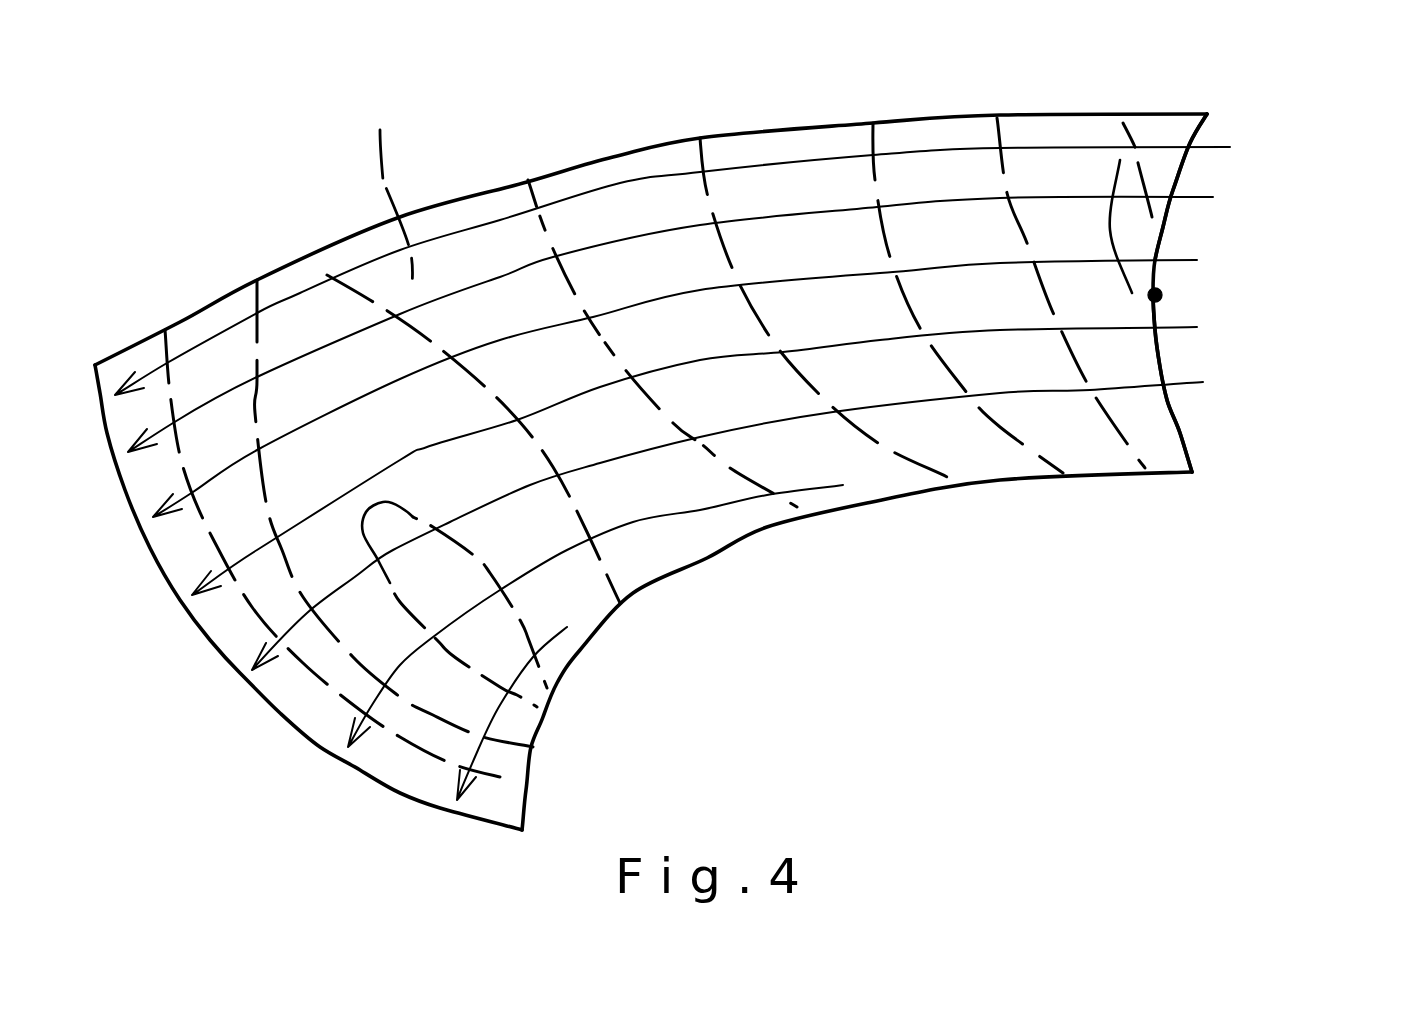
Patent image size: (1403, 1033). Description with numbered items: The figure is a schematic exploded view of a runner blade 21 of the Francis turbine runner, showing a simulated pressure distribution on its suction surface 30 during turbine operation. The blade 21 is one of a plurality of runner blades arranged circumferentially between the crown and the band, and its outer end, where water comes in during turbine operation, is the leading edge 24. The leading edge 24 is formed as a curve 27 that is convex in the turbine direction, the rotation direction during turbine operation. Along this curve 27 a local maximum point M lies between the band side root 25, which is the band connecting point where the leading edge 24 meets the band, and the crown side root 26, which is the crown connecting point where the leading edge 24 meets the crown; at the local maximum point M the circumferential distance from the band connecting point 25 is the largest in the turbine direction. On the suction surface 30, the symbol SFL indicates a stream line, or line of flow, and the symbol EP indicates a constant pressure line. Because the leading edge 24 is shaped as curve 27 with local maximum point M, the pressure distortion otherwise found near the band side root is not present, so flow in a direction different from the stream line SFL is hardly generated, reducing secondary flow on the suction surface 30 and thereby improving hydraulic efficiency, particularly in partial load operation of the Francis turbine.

The runner blade 21 is at (224, 207).
The leading edge 24 is at (1157, 357).
The band side root 25 is at (757, 537).
The crown side root 26 is at (737, 133).
The curve 27 is at (1218, 237).
The suction surface 30 is at (713, 353).
The local maximum point M is at (1160, 295).
The constant pressure line EP is at (384, 185).
The stream line SFL is at (618, 182).